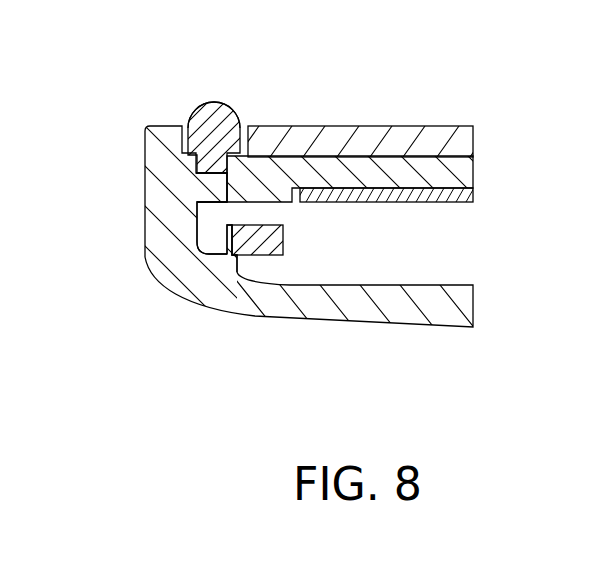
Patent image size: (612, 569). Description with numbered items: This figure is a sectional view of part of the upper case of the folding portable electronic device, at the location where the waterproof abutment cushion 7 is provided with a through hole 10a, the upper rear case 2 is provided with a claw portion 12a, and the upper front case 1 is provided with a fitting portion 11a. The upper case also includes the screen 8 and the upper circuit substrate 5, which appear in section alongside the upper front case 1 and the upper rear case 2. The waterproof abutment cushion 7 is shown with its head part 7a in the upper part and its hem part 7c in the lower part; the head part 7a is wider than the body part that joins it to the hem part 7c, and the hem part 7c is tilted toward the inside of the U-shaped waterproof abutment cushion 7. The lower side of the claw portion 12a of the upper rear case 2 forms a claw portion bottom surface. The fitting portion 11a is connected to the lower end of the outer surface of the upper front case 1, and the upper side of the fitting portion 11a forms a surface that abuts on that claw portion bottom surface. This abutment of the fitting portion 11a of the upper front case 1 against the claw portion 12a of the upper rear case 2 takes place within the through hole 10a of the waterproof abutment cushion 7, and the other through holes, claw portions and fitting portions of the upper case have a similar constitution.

The upper front case 1 is at (463, 176).
The upper rear case 2 is at (163, 141).
The upper circuit substrate 5 is at (433, 198).
The waterproof abutment cushion 7 is at (207, 102).
The head part 7a is at (238, 118).
The hem part 7c is at (283, 238).
The screen 8 is at (392, 142).
The through hole 10a is at (213, 178).
The fitting portion 11a is at (219, 230).
The claw portion 12a is at (203, 190).